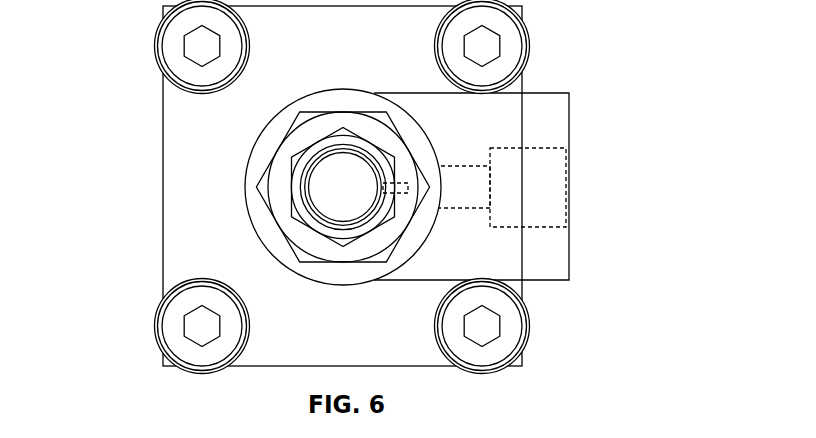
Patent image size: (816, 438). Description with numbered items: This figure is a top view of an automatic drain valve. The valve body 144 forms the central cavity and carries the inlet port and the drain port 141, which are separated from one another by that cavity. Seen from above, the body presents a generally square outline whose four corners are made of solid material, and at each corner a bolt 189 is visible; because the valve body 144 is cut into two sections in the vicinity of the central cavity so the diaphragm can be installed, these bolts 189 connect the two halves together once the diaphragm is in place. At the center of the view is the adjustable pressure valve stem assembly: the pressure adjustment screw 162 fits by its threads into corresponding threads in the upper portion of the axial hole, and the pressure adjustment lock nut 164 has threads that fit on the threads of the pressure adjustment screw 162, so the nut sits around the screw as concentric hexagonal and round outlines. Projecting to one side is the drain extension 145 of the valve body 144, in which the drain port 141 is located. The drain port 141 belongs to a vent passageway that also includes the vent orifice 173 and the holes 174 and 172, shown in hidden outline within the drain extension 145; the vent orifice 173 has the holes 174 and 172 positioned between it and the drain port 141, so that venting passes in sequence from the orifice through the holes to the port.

The drain port 141 is at (548, 193).
The valve body 144 is at (293, 160).
The drain extension 145 is at (569, 245).
The pressure adjustment screw 162 is at (257, 234).
The pressure adjustment lock nut 164 is at (390, 122).
The hole 172 is at (465, 200).
The vent orifice 173 is at (420, 186).
The hole 174 is at (408, 188).
The bolts 189 is at (157, 35).